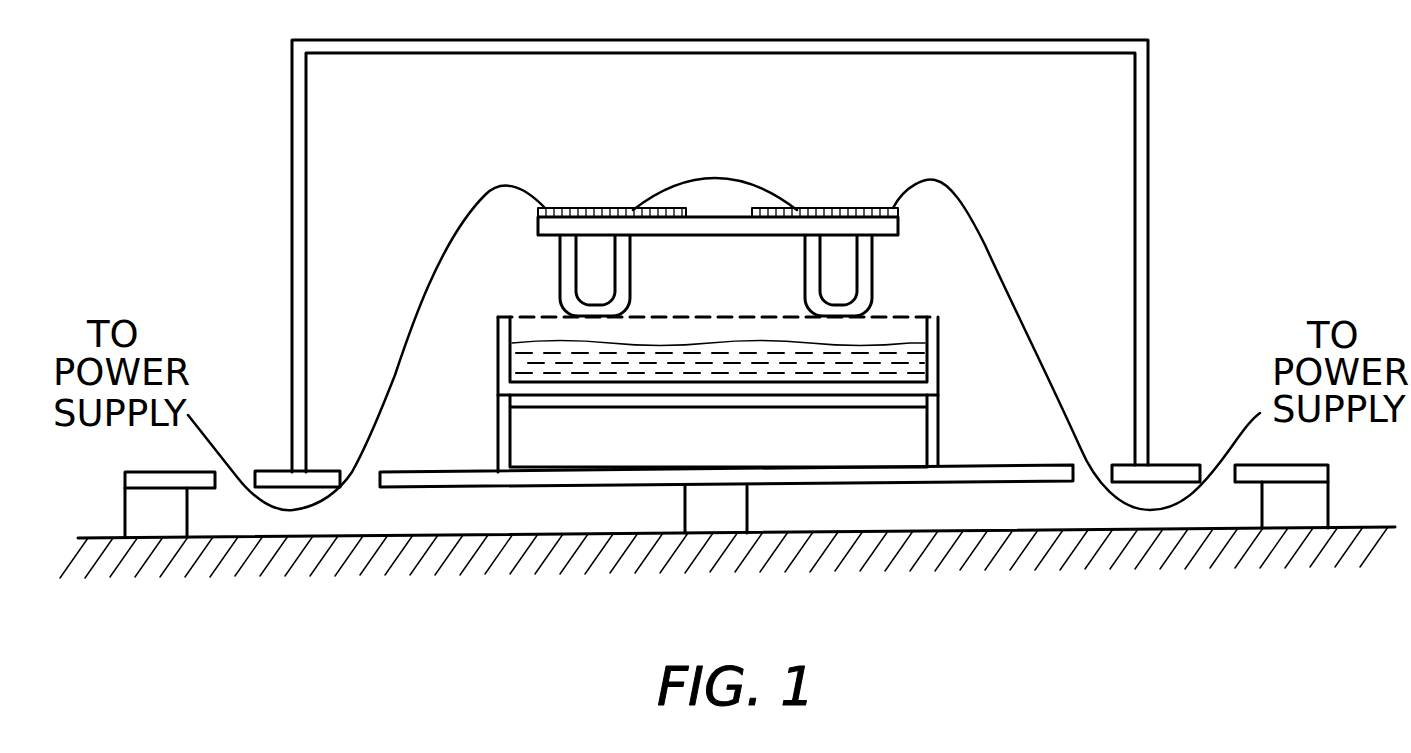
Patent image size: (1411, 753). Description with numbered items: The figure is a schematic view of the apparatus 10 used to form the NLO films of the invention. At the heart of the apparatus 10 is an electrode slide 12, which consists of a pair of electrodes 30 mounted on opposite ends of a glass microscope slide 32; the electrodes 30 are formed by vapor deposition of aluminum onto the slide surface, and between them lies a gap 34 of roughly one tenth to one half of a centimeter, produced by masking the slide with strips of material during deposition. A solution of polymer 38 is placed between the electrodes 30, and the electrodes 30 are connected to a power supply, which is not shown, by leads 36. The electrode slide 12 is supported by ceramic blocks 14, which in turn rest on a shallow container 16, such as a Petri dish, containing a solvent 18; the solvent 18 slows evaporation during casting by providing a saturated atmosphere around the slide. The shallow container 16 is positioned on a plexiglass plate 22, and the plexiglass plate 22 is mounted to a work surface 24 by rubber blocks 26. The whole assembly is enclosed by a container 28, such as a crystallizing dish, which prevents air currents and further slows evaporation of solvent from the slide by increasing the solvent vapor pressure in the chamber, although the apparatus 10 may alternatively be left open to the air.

The apparatus 10 is at (393, 280).
The electrode slide 12 is at (884, 173).
The ceramic blocks 14 is at (560, 262).
The shallow container 16 is at (938, 355).
The solvent 18 is at (512, 357).
The plexiglass plate 22 is at (578, 470).
The work surface 24 is at (526, 540).
The rubber blocks 26 is at (187, 508).
The container 28 is at (292, 106).
The electrodes 30 is at (578, 208).
The glass microscope slide 32 is at (890, 226).
The gap 34 is at (705, 208).
The leads 36 is at (400, 350).
The solution of polymer 38 is at (667, 187).